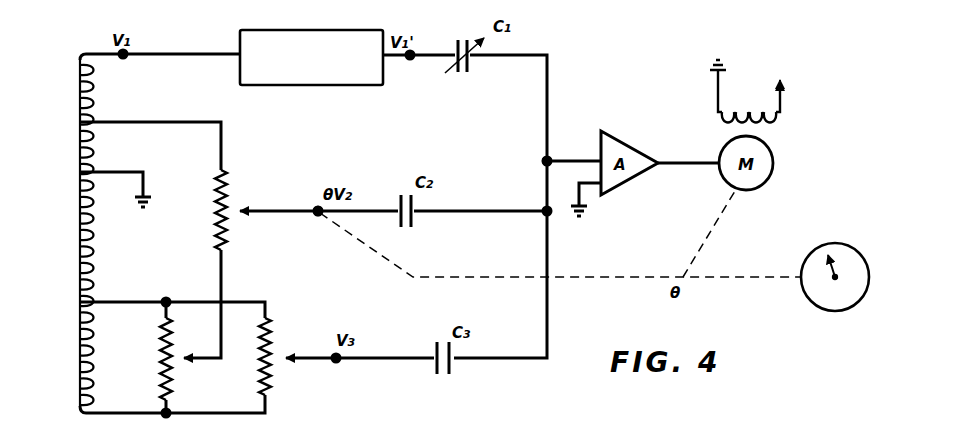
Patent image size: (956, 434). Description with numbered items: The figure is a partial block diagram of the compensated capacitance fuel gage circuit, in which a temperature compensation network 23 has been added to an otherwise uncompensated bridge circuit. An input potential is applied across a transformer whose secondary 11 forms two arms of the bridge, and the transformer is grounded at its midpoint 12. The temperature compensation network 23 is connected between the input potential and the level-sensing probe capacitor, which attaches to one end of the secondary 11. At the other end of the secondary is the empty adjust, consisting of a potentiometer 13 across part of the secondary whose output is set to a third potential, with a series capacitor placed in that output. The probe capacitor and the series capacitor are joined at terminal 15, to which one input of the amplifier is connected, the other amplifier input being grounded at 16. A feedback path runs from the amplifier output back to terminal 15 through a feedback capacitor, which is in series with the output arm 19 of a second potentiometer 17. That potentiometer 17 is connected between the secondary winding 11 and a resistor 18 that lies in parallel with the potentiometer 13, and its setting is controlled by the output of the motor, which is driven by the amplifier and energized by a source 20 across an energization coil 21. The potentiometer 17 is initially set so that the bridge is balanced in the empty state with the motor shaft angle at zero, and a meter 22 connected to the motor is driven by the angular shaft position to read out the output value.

The transformer secondary 11 is at (78, 280).
The midpoint 12 is at (123, 172).
The potentiometer 13 is at (270, 385).
The terminal 15 is at (550, 158).
The ground 16 is at (584, 196).
The second potentiometer 17 is at (222, 192).
The resistor 18 is at (170, 374).
The output arm 19 is at (313, 217).
The source 20 is at (796, 70).
The energization coil 21 is at (778, 118).
The meter 22 is at (808, 252).
The temperature compensation network 23 is at (293, 30).